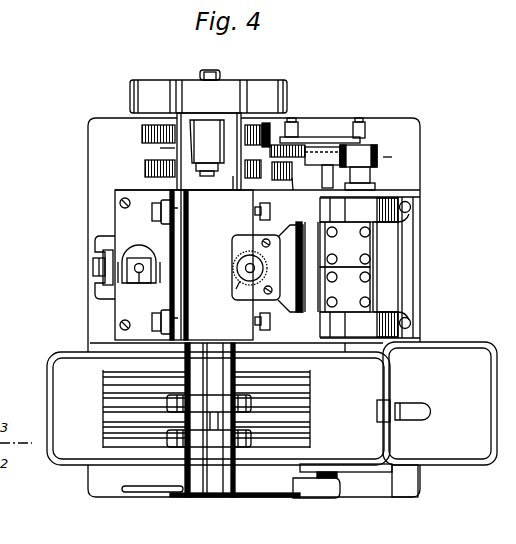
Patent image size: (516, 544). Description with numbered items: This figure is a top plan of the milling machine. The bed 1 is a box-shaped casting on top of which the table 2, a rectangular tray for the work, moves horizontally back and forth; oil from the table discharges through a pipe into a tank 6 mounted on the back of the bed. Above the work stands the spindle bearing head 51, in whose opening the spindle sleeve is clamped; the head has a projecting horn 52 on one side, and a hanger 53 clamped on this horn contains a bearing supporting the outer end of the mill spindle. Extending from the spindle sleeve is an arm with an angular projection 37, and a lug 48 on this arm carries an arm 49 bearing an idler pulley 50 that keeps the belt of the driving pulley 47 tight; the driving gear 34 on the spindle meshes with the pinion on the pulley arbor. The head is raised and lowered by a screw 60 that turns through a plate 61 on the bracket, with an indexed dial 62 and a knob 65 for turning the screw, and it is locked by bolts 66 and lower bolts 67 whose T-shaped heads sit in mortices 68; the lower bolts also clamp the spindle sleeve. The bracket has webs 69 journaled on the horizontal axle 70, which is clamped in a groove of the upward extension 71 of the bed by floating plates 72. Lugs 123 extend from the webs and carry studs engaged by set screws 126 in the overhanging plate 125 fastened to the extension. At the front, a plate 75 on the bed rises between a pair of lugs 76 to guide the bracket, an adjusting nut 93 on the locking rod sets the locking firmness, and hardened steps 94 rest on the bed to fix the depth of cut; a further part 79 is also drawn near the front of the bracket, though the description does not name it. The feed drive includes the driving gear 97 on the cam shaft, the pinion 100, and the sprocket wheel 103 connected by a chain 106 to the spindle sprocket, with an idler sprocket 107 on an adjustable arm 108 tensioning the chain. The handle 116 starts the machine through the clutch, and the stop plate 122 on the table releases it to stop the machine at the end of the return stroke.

The bed 1 is at (254, 307).
The table 2 is at (218, 408).
The tank 6 is at (440, 403).
The gear 34 is at (142, 134).
The angular projection 37 is at (161, 149).
The driving pulley 47 is at (208, 96).
The lug 48 is at (233, 176).
The arm 49 is at (209, 151).
The idler pulley 50 is at (239, 91).
The head 51 is at (184, 265).
The horn 52 is at (192, 375).
The hanger 53 is at (210, 448).
The screw 60 is at (240, 280).
The plate 61 is at (248, 300).
The indexed dial 62 is at (245, 236).
The knob 65 is at (246, 268).
The bolts 66 is at (172, 213).
The lower bolts 67 is at (152, 212).
The mortices 68 is at (270, 210).
The webs 69 is at (359, 267).
The axle 70 is at (353, 345).
The upward extension 71 is at (385, 267).
The floating plates 72 is at (345, 267).
The plate 75 is at (93, 262).
The lugs 76 is at (95, 240).
The pin 79 is at (139, 275).
The adjusting nut 93 is at (148, 258).
The hardened steps 94 is at (120, 204).
The driving gear 97 is at (145, 166).
The pinion 100 is at (293, 178).
The sprocket wheel 103 is at (388, 157).
The chain 106 is at (325, 147).
The idler sprocket 107 is at (302, 145).
The adjustable arm 108 is at (338, 140).
The handle 116 is at (162, 487).
The stop plate 122 is at (323, 467).
The lugs 123 is at (409, 221).
The plate 125 is at (410, 258).
The set screws 126 is at (412, 208).